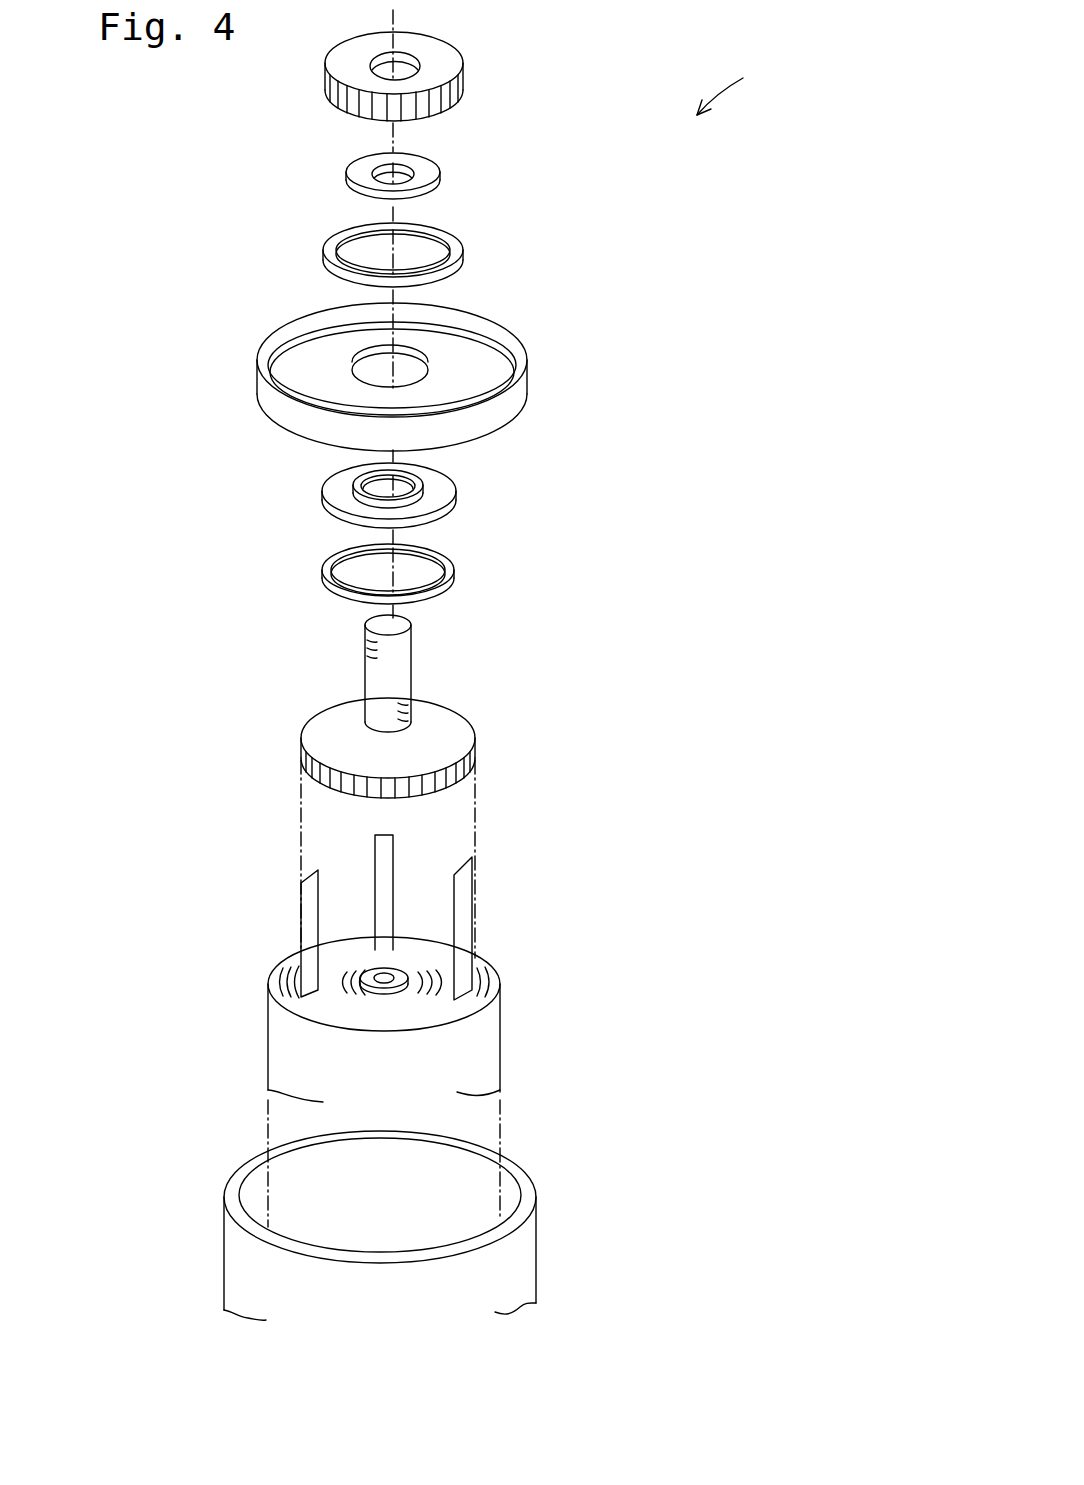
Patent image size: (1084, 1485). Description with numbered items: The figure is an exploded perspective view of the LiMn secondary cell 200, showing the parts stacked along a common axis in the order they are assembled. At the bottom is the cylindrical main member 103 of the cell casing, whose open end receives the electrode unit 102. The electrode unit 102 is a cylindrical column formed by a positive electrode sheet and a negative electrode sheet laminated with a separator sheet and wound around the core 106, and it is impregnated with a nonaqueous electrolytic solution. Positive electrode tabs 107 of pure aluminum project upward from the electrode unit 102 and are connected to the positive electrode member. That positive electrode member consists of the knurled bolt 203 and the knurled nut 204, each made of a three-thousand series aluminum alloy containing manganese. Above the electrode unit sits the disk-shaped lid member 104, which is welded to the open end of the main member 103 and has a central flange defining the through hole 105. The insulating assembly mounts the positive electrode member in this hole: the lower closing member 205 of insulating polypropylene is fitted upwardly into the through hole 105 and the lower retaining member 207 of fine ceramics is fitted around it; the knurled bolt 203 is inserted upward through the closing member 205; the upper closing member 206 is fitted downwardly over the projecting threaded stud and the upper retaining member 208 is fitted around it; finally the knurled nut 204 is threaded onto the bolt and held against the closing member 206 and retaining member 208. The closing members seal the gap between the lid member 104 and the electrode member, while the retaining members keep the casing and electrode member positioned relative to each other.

The LiMn secondary cell 200 is at (756, 86).
The knurled nut 204 is at (453, 70).
The upper closing member 206 is at (437, 180).
The upper retaining member 208 is at (455, 260).
The lid member 104 is at (513, 397).
The through hole 105 is at (368, 358).
The lower closing member 205 is at (447, 498).
The lower retaining member 207 is at (450, 572).
The knurled bolt 203 is at (475, 752).
The positive electrode tabs 107 is at (302, 905).
The electrode unit 102 is at (405, 1082).
The core 106 is at (372, 995).
The cylindrical main member 103 is at (528, 1260).